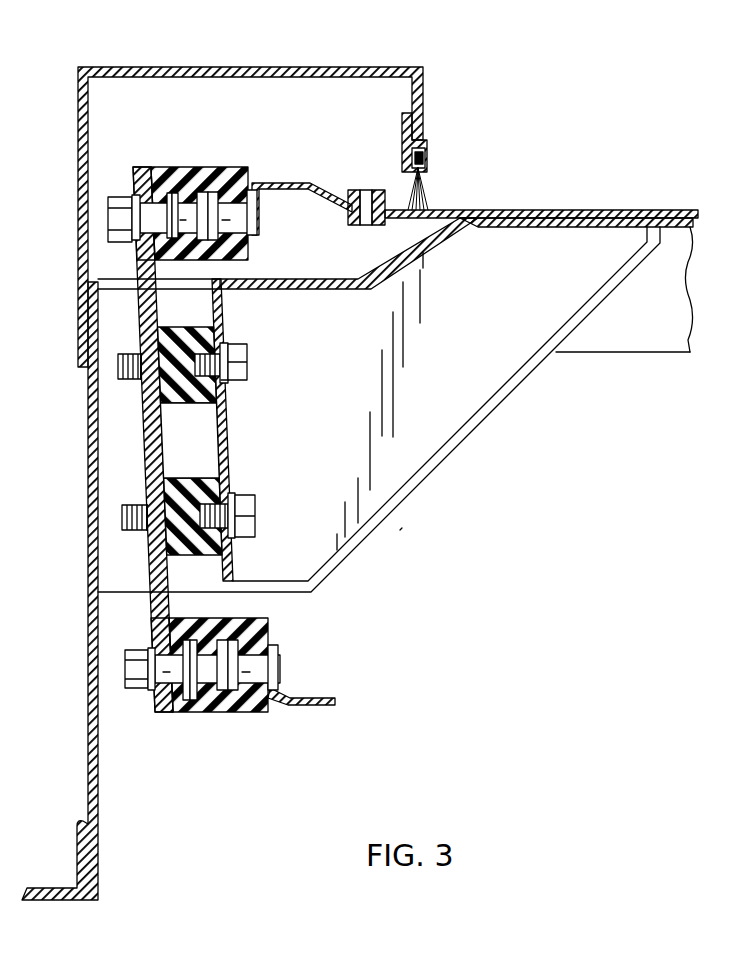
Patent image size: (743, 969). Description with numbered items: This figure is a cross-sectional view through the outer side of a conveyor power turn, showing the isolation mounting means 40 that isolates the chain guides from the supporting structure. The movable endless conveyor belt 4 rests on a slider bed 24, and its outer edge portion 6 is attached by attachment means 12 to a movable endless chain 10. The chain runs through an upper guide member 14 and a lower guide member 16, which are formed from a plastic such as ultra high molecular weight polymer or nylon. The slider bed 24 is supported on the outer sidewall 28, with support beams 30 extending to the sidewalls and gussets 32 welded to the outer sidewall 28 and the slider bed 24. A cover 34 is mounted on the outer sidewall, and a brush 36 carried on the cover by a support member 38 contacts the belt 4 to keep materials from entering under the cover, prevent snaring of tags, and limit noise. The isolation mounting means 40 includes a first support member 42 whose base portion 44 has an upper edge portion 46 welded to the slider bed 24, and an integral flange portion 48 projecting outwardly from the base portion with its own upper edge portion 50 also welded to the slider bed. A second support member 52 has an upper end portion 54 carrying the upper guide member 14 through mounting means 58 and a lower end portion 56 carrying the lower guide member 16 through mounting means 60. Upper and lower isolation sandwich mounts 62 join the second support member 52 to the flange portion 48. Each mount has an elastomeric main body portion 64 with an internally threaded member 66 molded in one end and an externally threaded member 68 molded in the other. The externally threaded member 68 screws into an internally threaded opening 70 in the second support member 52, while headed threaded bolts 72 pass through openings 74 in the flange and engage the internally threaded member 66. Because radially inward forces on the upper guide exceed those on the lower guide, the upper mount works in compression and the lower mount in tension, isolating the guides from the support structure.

The movable endless conveyor belt 4 is at (592, 210).
The outer edge portion 6 is at (138, 36).
The movable endless chain 10 is at (263, 220).
The attachment means 12 is at (307, 160).
The upper guide member 14 is at (177, 170).
The lower guide member 16 is at (217, 708).
The slider bed 24 is at (678, 228).
The outer sidewall 28 is at (88, 473).
The support beams 30 is at (628, 340).
The gussets 32 is at (399, 504).
The cover 34 is at (343, 77).
The brush 36 is at (421, 192).
The support member 38 is at (402, 128).
The isolation mounting means 40 is at (250, 419).
The first support member 42 is at (475, 432).
The base portion 44 is at (452, 374).
The upper edge portion 46 is at (493, 227).
The flange portion 48 is at (226, 452).
The upper edge portion 50 is at (218, 281).
The second support member 52 is at (146, 465).
The upper end portion 54 is at (135, 176).
The lower end portion 56 is at (157, 712).
The mounting means 58 is at (140, 221).
The mounting means 60 is at (163, 657).
The isolation sandwich mount 62 is at (187, 477).
The main body portion 64 is at (171, 330).
The internally threaded member 66 is at (232, 386).
The externally threaded member 68 is at (134, 378).
The internally threaded opening 70 is at (147, 356).
The headed threaded bolts 72 is at (247, 361).
The openings 74 is at (225, 345).